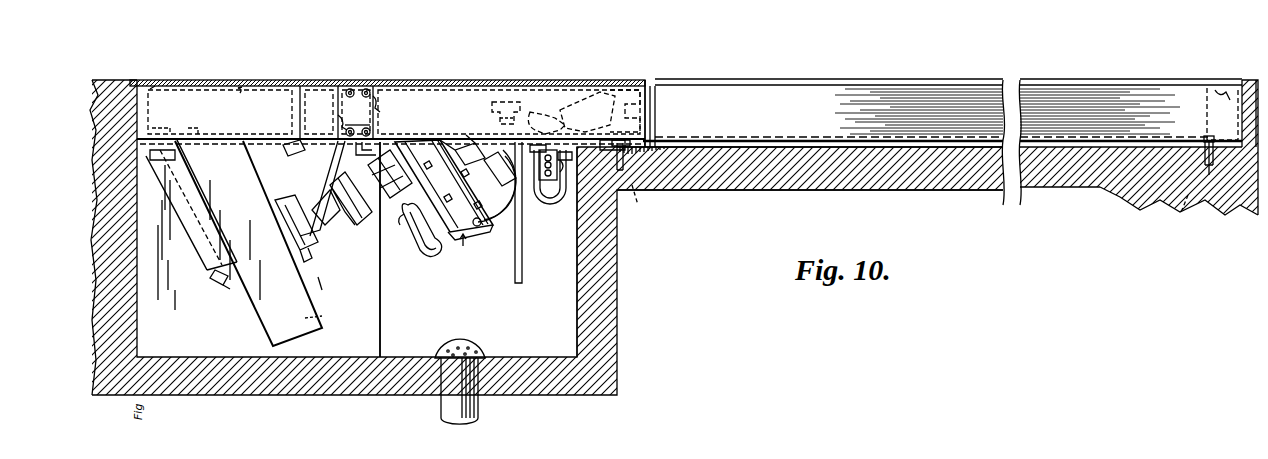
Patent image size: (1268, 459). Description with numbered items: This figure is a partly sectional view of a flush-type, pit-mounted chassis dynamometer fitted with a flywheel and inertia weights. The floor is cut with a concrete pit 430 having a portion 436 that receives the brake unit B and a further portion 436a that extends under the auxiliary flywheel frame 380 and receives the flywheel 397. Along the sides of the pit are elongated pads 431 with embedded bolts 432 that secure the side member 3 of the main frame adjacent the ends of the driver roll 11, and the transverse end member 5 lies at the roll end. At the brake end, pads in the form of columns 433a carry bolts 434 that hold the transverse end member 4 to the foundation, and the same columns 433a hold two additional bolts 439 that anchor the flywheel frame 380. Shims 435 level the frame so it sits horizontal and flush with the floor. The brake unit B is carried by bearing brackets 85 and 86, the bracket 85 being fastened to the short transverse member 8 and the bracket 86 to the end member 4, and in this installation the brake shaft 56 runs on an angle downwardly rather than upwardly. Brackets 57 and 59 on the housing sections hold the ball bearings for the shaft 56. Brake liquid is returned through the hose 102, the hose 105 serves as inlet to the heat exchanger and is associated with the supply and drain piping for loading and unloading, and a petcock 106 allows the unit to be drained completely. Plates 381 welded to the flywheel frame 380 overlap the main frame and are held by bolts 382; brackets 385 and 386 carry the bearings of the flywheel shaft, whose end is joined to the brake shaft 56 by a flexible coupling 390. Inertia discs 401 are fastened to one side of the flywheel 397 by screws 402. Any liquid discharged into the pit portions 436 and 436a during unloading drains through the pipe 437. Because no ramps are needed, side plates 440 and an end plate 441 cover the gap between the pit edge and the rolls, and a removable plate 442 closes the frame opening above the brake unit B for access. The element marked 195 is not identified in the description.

The side member 3 is at (912, 96).
The transverse end member 4 is at (358, 88).
The transverse end member 5 is at (1243, 85).
The short transverse member 8 is at (506, 100).
The roll 11 is at (1065, 86).
The brake shaft 56 is at (356, 205).
The bracket 57 is at (390, 205).
The bracket 59 is at (450, 141).
The bearing bracket 85 is at (500, 130).
The bearing bracket 86 is at (346, 166).
The hose 102 is at (426, 252).
The hose 105 is at (500, 192).
The petcock 106 is at (478, 226).
The cam member 195 is at (568, 108).
The flywheel frame 380 is at (243, 103).
The plate 381 is at (316, 95).
The bolts 382 is at (340, 118).
The bracket 385 is at (206, 266).
The bracket 386 is at (298, 162).
The flexible coupling 390 is at (345, 228).
The flywheel 397 is at (262, 322).
The inertia discs 401 is at (316, 283).
The screws 402 is at (322, 316).
The pit 430 is at (762, 152).
The pads 431 is at (715, 147).
The bolts 432 is at (1185, 213).
The columns 433a is at (384, 312).
The bolts 434 is at (376, 148).
The shims 435 is at (1208, 138).
The pit portion 436 is at (582, 310).
The pit portion 436a is at (370, 345).
The pipe 437 is at (480, 417).
The bolts 439 is at (178, 137).
The side plates 440 is at (650, 82).
The end plate 441 is at (1215, 86).
The plate 442 is at (455, 80).
The brake unit B is at (460, 255).